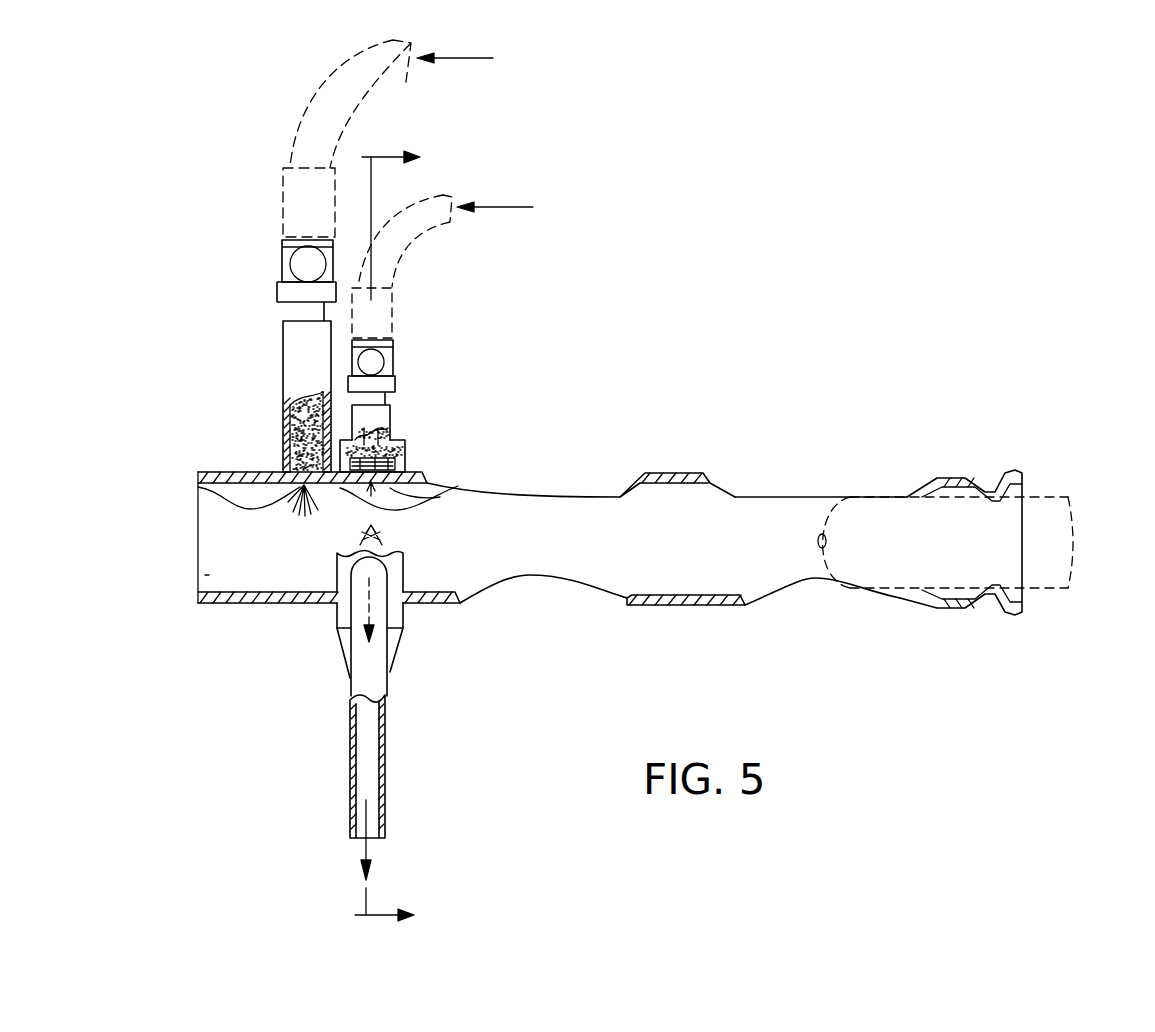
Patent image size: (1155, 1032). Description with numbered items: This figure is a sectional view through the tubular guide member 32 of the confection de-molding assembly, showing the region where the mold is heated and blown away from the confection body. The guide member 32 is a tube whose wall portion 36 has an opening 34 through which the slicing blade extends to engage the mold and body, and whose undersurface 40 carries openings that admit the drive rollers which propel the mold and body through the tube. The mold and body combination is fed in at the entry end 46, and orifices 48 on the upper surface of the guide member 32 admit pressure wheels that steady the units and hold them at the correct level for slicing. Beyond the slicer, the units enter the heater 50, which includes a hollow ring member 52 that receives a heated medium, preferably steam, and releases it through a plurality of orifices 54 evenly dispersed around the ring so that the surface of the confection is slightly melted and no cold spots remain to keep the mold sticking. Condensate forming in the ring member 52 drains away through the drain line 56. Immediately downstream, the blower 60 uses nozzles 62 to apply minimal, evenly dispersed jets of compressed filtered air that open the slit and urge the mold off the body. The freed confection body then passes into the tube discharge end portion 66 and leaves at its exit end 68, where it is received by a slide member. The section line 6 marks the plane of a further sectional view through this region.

The section line 6- 6 is at (434, 492).
The guide member 32 is at (707, 607).
The opening 34 is at (517, 497).
The wall portion 36 is at (667, 473).
The undersurface 40 is at (660, 605).
The entry end 46 is at (1054, 481).
The orifices 48 is at (780, 497).
The heater 50 is at (393, 441).
The hollow ring member 52 is at (407, 452).
The orifices 54 is at (380, 504).
The drain line 56 is at (350, 757).
The blower 60 is at (288, 340).
The nozzles 62 is at (198, 486).
The tube discharge end portion 66 is at (207, 575).
The exit end 68 is at (197, 533).